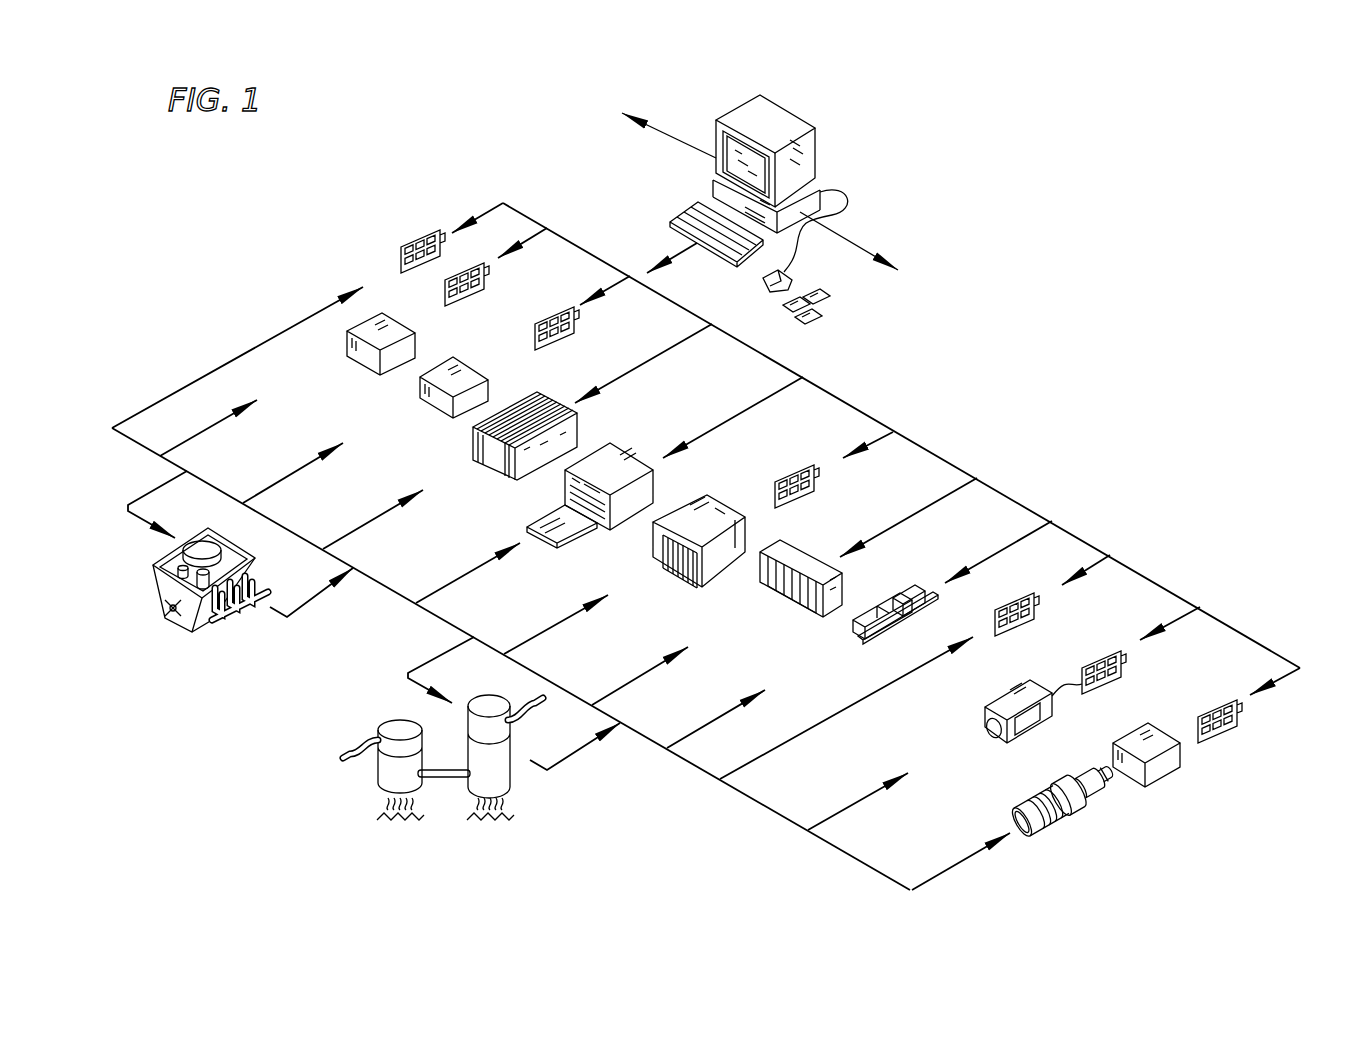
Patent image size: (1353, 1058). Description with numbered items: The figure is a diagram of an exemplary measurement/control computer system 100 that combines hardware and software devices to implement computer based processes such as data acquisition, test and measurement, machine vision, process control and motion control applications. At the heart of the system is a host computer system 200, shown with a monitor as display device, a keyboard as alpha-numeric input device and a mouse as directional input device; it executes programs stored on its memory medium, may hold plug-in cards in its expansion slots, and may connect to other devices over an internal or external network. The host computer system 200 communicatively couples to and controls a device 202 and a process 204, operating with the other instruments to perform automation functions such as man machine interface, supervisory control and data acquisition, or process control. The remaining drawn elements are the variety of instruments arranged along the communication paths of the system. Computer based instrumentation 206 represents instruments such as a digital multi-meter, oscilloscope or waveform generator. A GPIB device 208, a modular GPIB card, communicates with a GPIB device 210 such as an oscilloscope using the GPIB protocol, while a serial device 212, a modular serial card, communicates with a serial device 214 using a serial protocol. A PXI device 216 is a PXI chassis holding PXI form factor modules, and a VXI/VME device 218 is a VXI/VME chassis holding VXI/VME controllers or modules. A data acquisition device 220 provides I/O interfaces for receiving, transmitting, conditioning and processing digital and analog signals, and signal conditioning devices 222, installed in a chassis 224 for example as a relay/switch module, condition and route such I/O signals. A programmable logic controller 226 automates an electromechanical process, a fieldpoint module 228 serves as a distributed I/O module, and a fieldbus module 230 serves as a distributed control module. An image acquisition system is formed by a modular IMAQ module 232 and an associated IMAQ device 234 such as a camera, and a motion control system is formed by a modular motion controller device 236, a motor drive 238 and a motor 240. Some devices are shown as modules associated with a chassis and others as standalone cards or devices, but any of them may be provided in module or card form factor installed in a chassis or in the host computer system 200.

The computer system 100 is at (1072, 170).
The host computer system 200 is at (784, 110).
The device 202 is at (178, 632).
The process 204 is at (374, 728).
The computer based instrumentation 206 is at (413, 246).
The GPIB device 208 is at (470, 304).
The GPIB device 210 is at (366, 369).
The serial device 212 is at (549, 322).
The serial device 214 is at (433, 409).
The PXI device 216 is at (487, 461).
The VXI/VME device 218 is at (543, 548).
The data acquisition device 220 is at (789, 478).
The signal conditioning devices 222 is at (672, 578).
The chassis 224 is at (657, 562).
The programmable logic controller 226 is at (775, 600).
The fieldpoint module 228 is at (855, 642).
The fieldbus module 230 is at (1014, 629).
The IMAQ module 232 is at (1106, 677).
The IMAQ device 234 is at (989, 741).
The motion controller device 236 is at (1225, 727).
The motor drive 238 is at (1165, 772).
The motor 240 is at (1078, 811).